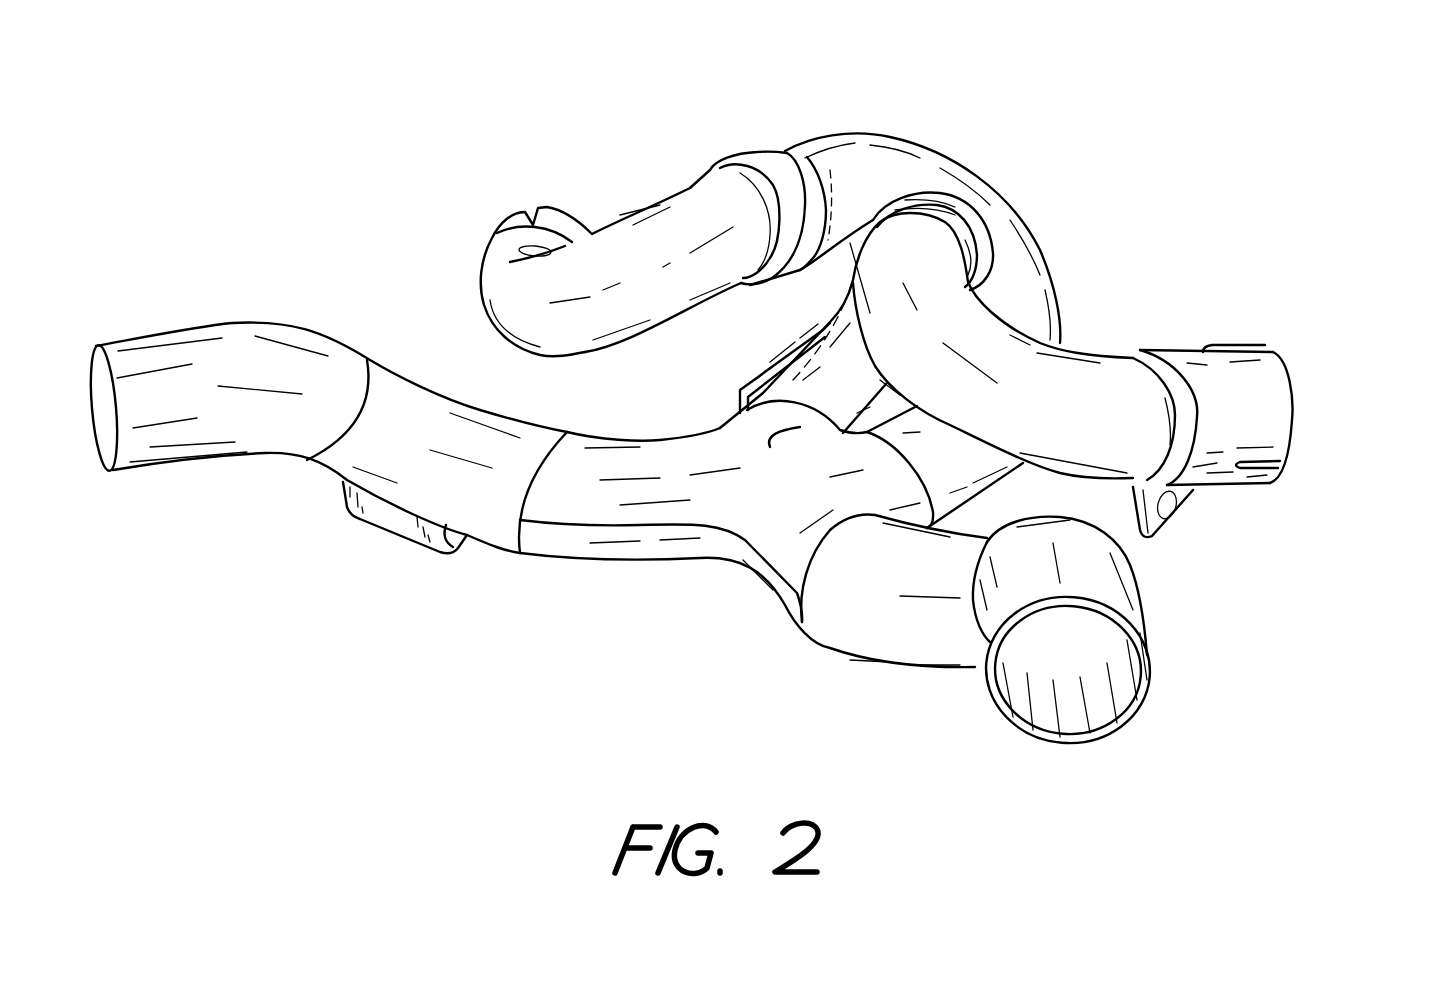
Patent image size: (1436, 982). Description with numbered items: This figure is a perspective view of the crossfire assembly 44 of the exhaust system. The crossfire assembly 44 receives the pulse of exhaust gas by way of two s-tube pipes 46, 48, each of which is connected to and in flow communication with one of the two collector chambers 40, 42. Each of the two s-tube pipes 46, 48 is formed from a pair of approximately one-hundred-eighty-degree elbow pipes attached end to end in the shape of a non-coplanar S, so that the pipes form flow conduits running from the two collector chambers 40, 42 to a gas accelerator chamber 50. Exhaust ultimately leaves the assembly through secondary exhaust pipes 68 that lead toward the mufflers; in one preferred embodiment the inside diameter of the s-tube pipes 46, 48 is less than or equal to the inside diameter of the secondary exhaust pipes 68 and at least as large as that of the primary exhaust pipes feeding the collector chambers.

The collector chamber 40 is at (558, 195).
The collector chamber 42 is at (1302, 398).
The crossfire assembly 44 is at (975, 150).
The s-tube pipe 46 is at (833, 133).
The s-tube pipe 48 is at (1090, 348).
The gas accelerator chamber 50 is at (647, 560).
The secondary exhaust pipe 68 is at (420, 383).